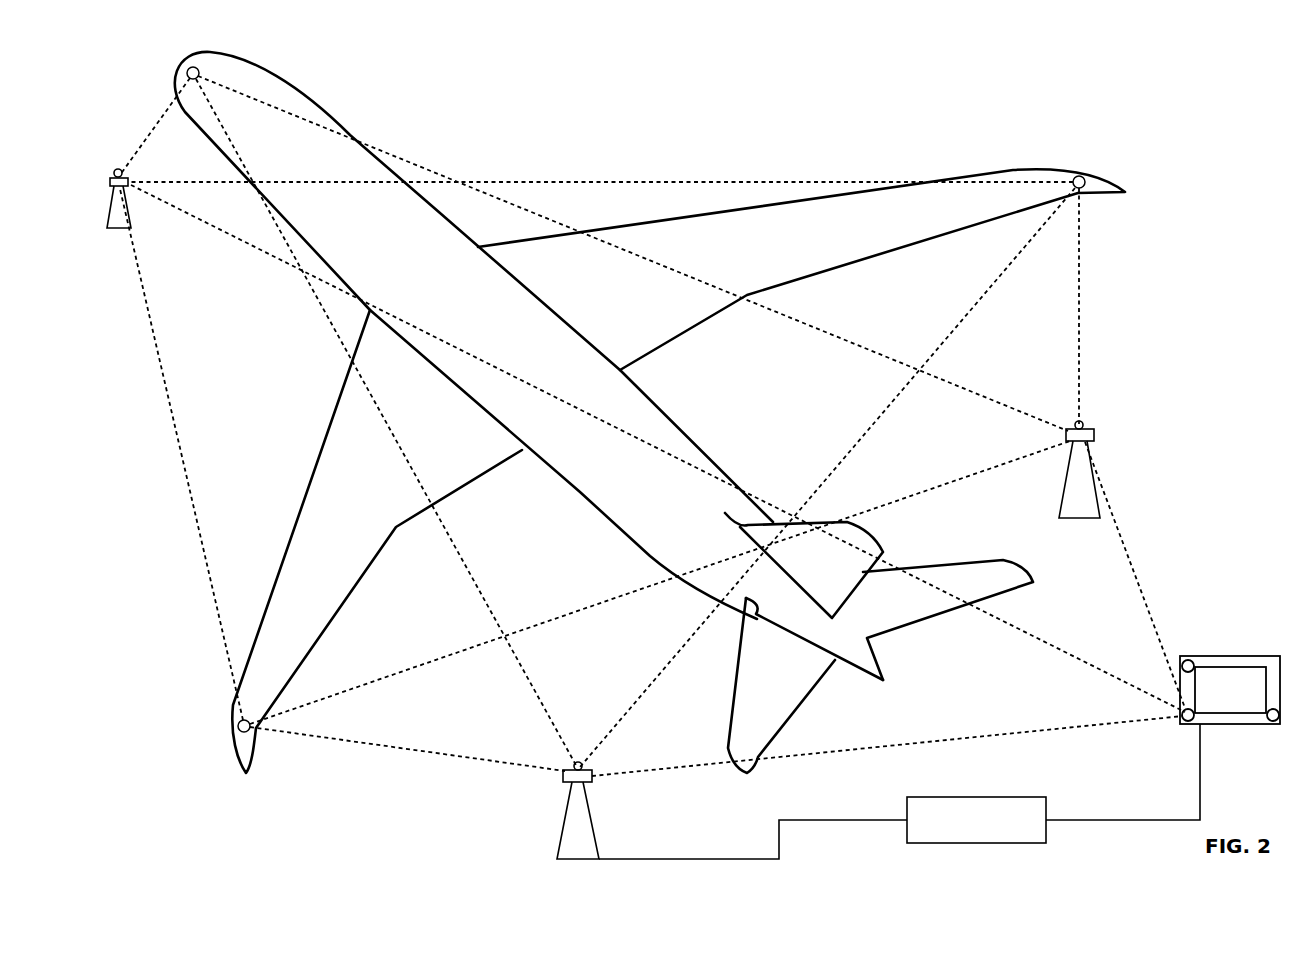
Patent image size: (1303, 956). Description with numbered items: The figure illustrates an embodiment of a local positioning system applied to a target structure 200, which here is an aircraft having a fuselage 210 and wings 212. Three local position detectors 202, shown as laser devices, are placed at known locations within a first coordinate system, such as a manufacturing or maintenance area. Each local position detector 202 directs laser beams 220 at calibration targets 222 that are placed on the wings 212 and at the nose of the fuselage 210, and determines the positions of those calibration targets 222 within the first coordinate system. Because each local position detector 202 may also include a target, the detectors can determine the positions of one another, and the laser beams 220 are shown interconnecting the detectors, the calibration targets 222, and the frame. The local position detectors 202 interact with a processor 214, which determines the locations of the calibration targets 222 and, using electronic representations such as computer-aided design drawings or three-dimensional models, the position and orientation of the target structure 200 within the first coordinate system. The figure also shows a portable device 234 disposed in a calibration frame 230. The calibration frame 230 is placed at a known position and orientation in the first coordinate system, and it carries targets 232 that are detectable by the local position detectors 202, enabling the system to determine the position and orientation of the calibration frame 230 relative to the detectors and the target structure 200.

The target structure 200 is at (460, 118).
The local position detector 202 is at (115, 230).
The fuselage 210 is at (650, 412).
The wing 212 is at (310, 473).
The processor 214 is at (905, 802).
The laser beam 220 is at (465, 758).
The calibration target 222 is at (188, 72).
The calibration frame 230 is at (1212, 670).
The target 232 is at (1189, 657).
The portable device 234 is at (1233, 667).